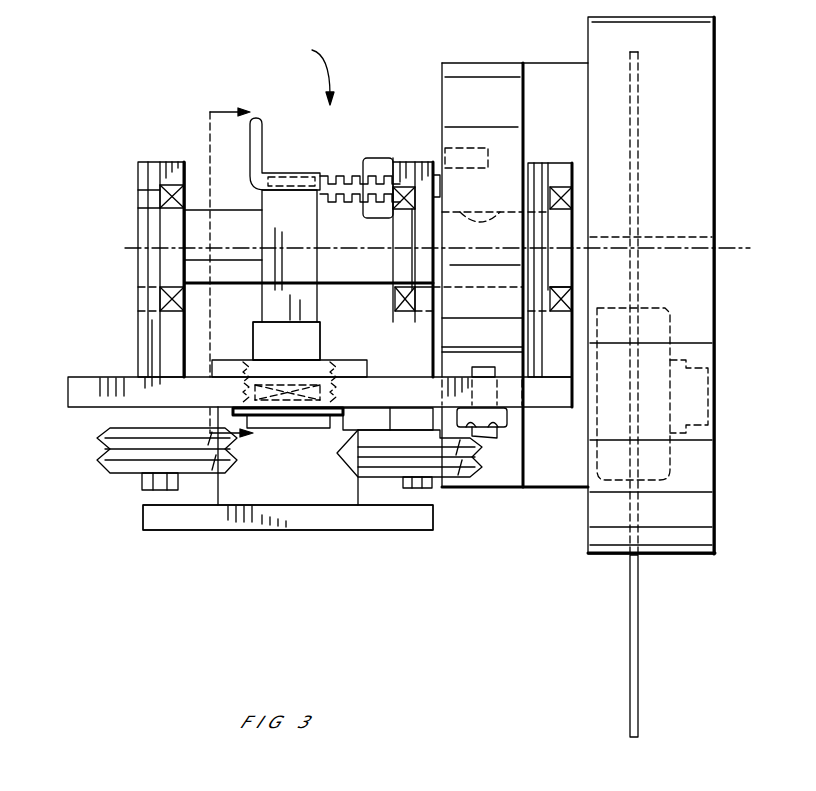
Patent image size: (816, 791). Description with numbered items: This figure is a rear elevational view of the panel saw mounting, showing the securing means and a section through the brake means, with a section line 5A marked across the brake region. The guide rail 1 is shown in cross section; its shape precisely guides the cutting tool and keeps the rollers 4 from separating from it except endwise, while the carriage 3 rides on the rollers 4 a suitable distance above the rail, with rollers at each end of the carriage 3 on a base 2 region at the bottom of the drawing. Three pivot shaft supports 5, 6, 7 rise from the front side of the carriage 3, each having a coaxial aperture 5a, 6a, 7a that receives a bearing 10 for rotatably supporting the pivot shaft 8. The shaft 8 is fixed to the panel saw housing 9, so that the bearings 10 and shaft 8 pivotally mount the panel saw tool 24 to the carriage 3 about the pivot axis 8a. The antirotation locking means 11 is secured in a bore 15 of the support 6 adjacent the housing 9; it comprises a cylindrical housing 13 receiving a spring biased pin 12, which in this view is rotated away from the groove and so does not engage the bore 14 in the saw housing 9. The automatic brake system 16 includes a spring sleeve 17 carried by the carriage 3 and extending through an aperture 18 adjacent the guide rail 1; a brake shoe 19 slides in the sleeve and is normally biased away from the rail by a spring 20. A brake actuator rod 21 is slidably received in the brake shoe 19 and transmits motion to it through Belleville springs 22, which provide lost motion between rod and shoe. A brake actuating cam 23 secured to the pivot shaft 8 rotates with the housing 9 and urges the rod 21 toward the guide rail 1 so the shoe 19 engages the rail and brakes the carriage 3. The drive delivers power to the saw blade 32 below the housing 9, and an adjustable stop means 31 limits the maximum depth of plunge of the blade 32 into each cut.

The guide rail 1 is at (262, 488).
The base plate body 2 is at (338, 515).
The carriage 3 is at (85, 382).
The rollers 4 is at (110, 468).
The pivot shaft support 5 is at (145, 180).
The coaxial aperture 5a is at (150, 283).
The pivot shaft support 6 is at (410, 342).
The coaxial aperture 6a is at (420, 283).
The pivot shaft support 7 is at (556, 165).
The coaxial aperture 7a is at (576, 290).
The pivot shaft 8 is at (236, 212).
The pivot axis 8a is at (125, 248).
The panel saw housing 9 is at (502, 78).
The bearing 10 is at (170, 192).
The antirotation locking means 11 is at (301, 170).
The spring biased pin 12 is at (253, 140).
The cylindrical housing 13 is at (347, 170).
The bearing holder 14 is at (445, 158).
The bore 15 is at (398, 188).
The automatic brake system 16 is at (250, 330).
The spring sleeve 17 is at (362, 360).
The aperture 18 is at (340, 392).
The brake shoe 19 is at (345, 418).
The spring 20 is at (252, 405).
The brake actuator rod 21 is at (310, 337).
The Belleville springs 22 is at (310, 408).
The brake actuating cam 23 is at (308, 250).
The panel saw tool 24 is at (306, 71).
The adjustable stop means 31 is at (488, 367).
The saw blade 32 is at (636, 676).
The section line 5A is at (215, 265).